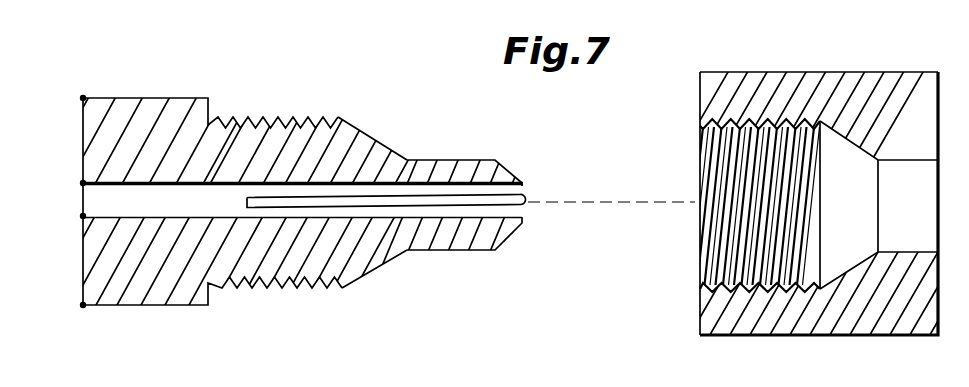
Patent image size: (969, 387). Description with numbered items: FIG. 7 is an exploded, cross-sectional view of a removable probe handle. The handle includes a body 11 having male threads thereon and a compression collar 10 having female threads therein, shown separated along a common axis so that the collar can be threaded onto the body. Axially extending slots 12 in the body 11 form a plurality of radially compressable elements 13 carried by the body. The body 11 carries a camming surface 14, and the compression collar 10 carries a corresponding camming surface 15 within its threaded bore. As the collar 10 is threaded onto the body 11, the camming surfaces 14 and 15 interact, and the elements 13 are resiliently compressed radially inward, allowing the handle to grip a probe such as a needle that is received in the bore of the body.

The compression collar 10 is at (701, 309).
The body 11 is at (349, 272).
The axially extending slots 12 is at (526, 209).
The radially compressable elements 13 is at (468, 236).
The camming surface of the body 14 is at (361, 142).
The camming surface of the collar 15 is at (848, 143).